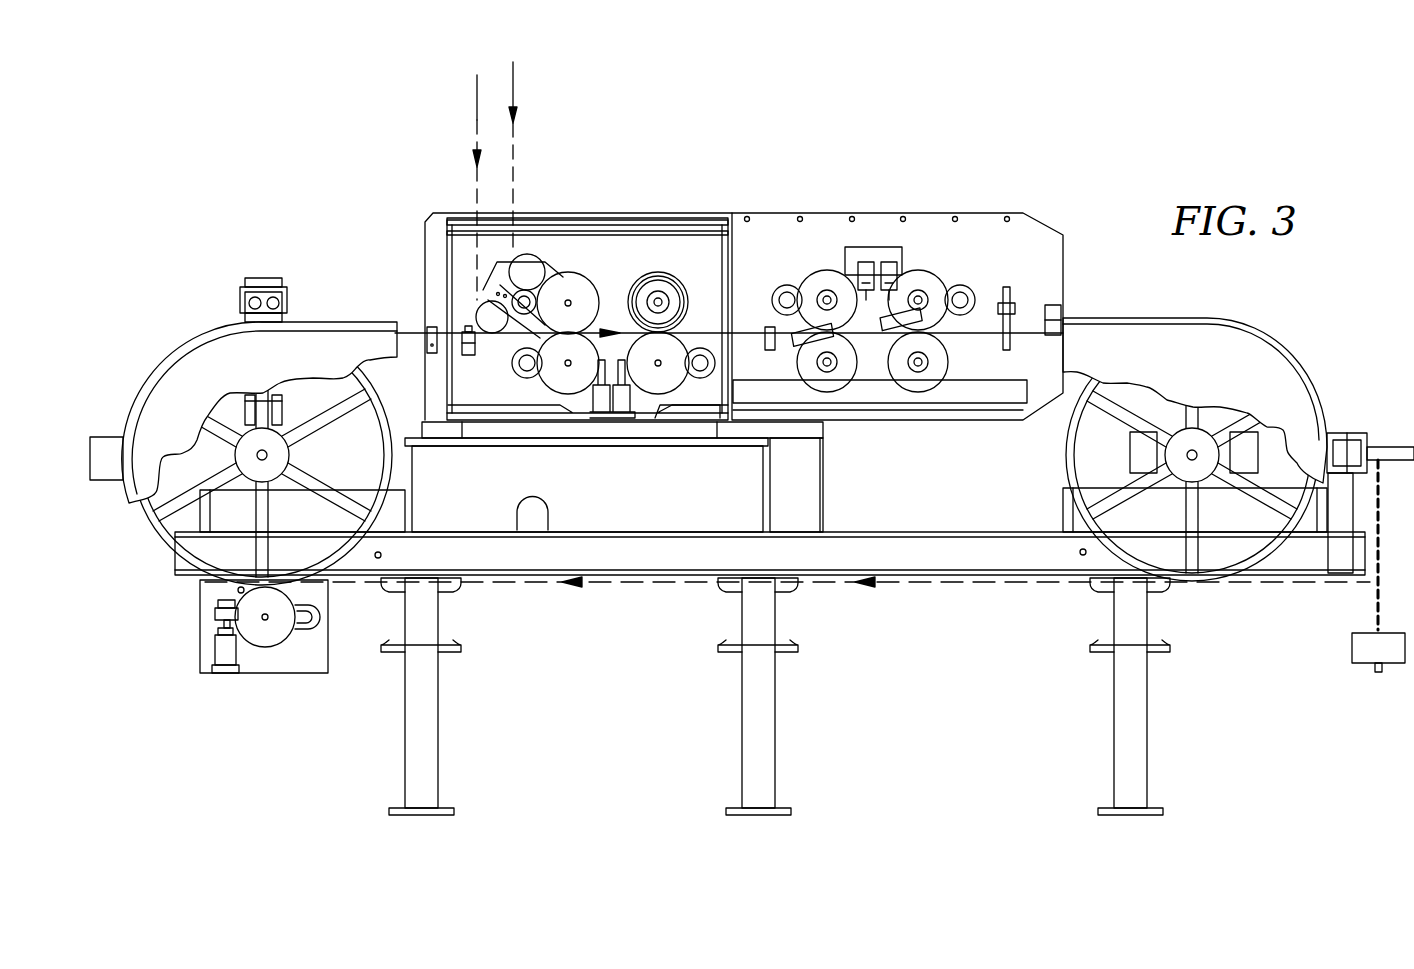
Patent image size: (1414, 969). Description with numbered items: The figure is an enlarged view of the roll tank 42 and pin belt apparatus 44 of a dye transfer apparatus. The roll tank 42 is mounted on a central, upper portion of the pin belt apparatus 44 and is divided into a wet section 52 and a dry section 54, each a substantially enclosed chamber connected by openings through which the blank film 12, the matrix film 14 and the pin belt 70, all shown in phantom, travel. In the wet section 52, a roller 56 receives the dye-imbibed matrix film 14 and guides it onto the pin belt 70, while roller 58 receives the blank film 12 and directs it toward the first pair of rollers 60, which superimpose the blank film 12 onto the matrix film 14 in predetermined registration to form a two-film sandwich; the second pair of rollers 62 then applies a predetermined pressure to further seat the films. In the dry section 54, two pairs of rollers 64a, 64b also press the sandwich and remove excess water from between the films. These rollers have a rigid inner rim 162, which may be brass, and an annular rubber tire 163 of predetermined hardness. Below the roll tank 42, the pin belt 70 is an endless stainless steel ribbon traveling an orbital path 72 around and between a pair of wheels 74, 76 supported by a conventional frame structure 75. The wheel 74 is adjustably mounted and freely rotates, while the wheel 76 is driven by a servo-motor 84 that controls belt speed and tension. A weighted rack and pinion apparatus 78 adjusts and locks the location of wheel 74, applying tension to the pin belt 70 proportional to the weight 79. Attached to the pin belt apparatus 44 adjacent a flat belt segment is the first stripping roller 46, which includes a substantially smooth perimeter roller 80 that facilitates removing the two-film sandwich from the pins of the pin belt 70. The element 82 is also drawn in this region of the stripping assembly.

The blank film 12 is at (513, 85).
The matrix film 14 is at (477, 100).
The roll tank 42 is at (614, 213).
The pin belt apparatus 44 is at (333, 310).
The first stripping roller 46 is at (221, 656).
The wet section 52 is at (697, 245).
The dry section 54 is at (975, 230).
The roller 56 is at (477, 312).
The roller 58 is at (532, 255).
The first pair of rollers 60 is at (592, 283).
The second pair of rollers 62 is at (686, 348).
The pair of rollers 64a is at (797, 365).
The pair of rollers 64b is at (935, 278).
The pin belt 70 is at (948, 578).
The orbital path 72 is at (410, 325).
The wheel 74 is at (1205, 582).
The frame structure 75 is at (740, 706).
The wheel 76 is at (170, 553).
The weighted rack and pinion apparatus 78 is at (1272, 427).
The weight 79 is at (1352, 648).
The smooth perimeter roller 80 is at (262, 648).
The valve assembly 82 is at (210, 590).
The servo-motor 84 is at (240, 300).
The rim 162 is at (676, 278).
The tire 163 is at (658, 290).